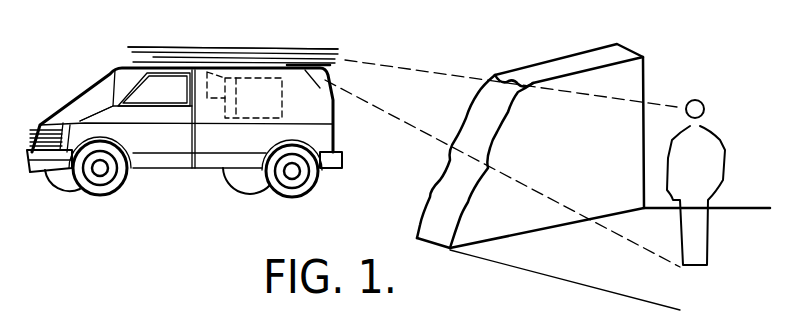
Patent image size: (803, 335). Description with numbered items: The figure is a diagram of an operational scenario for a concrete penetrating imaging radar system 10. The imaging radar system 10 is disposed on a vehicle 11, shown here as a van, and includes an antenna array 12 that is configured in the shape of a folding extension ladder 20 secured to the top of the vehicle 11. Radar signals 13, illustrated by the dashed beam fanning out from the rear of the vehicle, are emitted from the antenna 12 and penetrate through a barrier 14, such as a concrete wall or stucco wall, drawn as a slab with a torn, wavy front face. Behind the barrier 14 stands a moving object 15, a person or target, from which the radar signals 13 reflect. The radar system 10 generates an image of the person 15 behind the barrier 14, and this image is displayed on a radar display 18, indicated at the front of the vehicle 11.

The imaging radar system 10 is at (270, 110).
The vehicle 11 is at (225, 172).
The antenna array 12 is at (207, 68).
The radar signals 13 is at (432, 72).
The barrier 14 is at (645, 77).
The moving object 15 is at (720, 148).
The radar display 18 is at (106, 92).
The folding extension ladder 20 is at (278, 52).